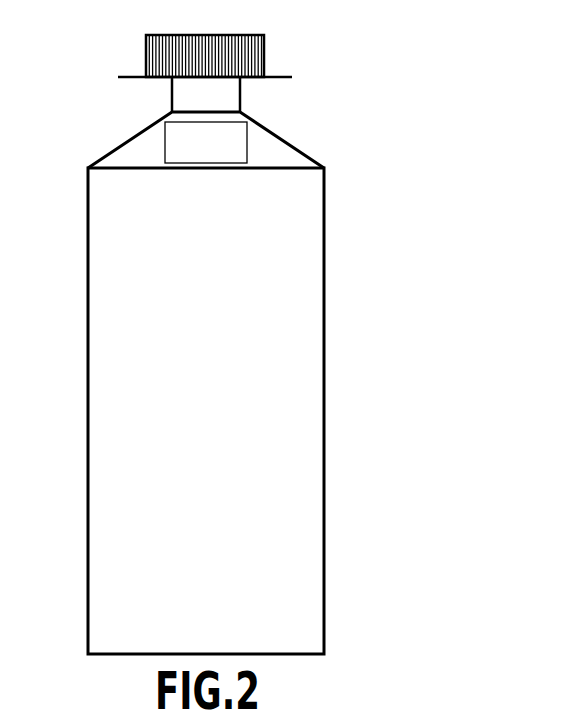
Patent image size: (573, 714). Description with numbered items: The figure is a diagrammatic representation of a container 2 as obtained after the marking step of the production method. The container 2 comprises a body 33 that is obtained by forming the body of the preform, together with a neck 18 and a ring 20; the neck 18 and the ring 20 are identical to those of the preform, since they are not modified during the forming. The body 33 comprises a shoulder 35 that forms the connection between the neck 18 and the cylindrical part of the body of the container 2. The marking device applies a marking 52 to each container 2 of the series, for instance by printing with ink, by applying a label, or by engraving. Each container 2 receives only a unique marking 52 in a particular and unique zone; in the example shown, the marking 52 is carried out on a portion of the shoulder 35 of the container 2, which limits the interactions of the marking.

The container 2 is at (433, 205).
The neck 18 is at (264, 35).
The ring 20 is at (290, 77).
The body 33 is at (324, 370).
The shoulder 35 is at (88, 168).
The marking 52 is at (190, 127).